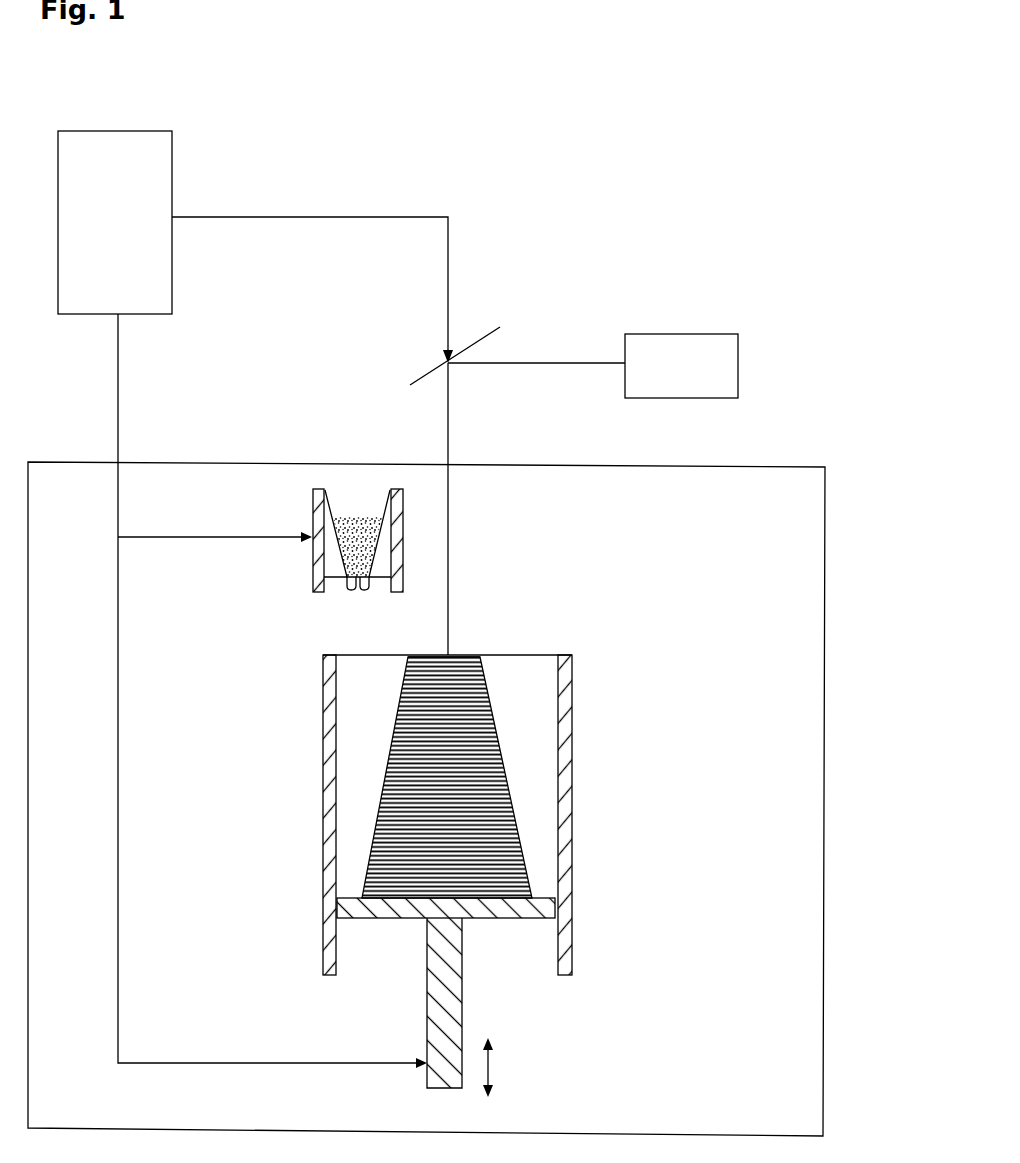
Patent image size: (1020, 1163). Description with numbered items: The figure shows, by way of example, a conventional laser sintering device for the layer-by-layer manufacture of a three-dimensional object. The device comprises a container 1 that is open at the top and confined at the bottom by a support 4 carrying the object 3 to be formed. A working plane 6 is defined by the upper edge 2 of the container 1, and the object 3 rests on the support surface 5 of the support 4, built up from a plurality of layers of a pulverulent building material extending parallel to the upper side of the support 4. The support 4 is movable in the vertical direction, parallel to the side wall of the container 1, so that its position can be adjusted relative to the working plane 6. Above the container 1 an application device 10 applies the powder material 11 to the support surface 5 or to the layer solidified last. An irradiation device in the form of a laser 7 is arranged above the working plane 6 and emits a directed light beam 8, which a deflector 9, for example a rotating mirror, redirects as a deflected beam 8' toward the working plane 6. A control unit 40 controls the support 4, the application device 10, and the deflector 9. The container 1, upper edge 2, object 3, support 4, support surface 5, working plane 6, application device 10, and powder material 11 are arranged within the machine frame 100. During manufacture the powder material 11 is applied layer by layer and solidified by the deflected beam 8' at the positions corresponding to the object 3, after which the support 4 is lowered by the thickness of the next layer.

The container 1 is at (572, 757).
The upper edge 2 is at (562, 655).
The object 3 is at (522, 833).
The support 4 is at (466, 940).
The support surface 5 is at (537, 898).
The working plane 6 is at (510, 655).
The laser 7 is at (675, 334).
The light beam 8 is at (536, 391).
The deflected beam 8' is at (480, 509).
The deflector 9 is at (490, 337).
The application device 10 is at (312, 510).
The powder material 11 is at (356, 518).
The control unit 40 is at (172, 160).
The machine frame 100 is at (825, 547).